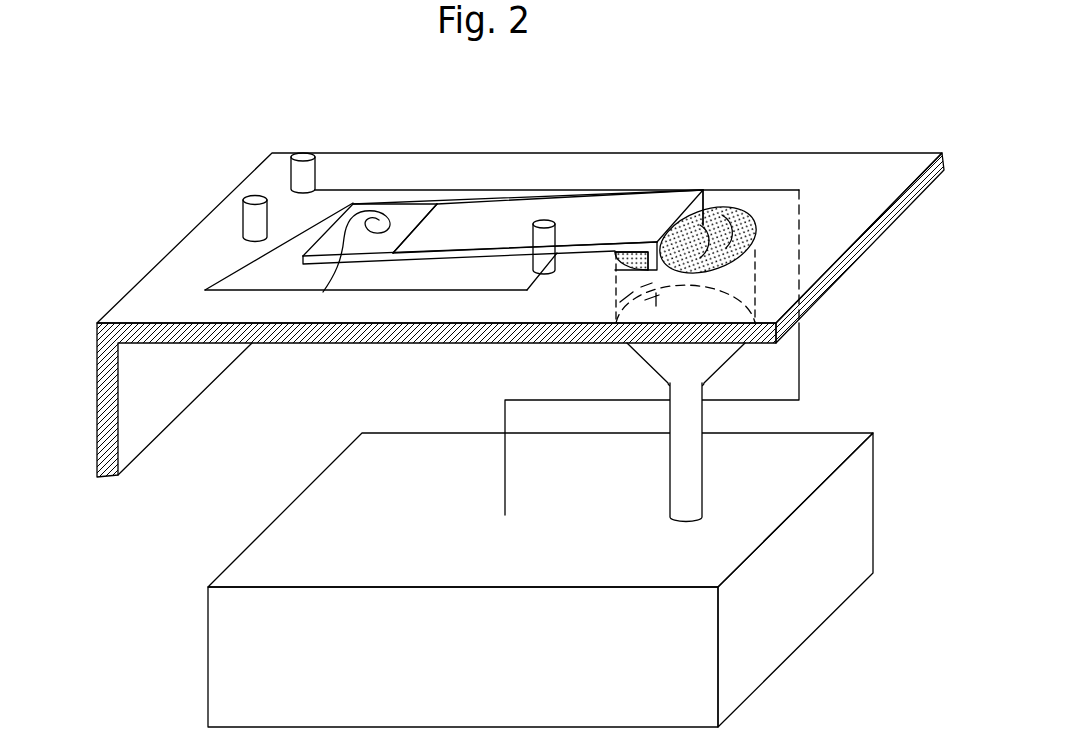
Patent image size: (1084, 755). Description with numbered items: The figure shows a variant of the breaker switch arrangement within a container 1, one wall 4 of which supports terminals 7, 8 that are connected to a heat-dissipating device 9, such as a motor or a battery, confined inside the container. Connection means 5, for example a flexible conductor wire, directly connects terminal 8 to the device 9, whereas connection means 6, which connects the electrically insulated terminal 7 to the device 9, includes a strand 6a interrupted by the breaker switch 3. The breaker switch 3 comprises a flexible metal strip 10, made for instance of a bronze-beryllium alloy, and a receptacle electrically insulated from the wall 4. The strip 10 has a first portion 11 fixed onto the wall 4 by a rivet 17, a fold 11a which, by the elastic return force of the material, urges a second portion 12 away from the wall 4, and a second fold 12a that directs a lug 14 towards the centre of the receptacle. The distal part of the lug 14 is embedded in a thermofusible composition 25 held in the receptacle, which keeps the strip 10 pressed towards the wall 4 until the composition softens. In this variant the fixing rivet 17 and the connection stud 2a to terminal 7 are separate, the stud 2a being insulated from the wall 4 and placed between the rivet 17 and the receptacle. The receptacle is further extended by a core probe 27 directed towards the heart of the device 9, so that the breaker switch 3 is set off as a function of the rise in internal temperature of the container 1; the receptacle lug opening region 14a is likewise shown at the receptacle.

The container 1 is at (172, 191).
The connection stud 2a is at (533, 265).
The breaker switch 3 is at (658, 160).
The wall 4 is at (185, 283).
The connection means 5 is at (367, 188).
The connection means 6 is at (247, 283).
The strand 6a is at (423, 290).
The terminal 7 is at (253, 199).
The terminal 8 is at (302, 151).
The device 9 is at (767, 627).
The flexible metal strip 10 is at (598, 172).
The first portion 11 is at (410, 214).
The fold 11a is at (422, 217).
The second portion 12 is at (507, 222).
The second fold 12a is at (683, 212).
The lug 14 is at (708, 222).
The lens holder opening 14a is at (616, 296).
The rivet 17 is at (346, 264).
The thermofusible composition 25 is at (748, 225).
The core probe 27 is at (690, 450).